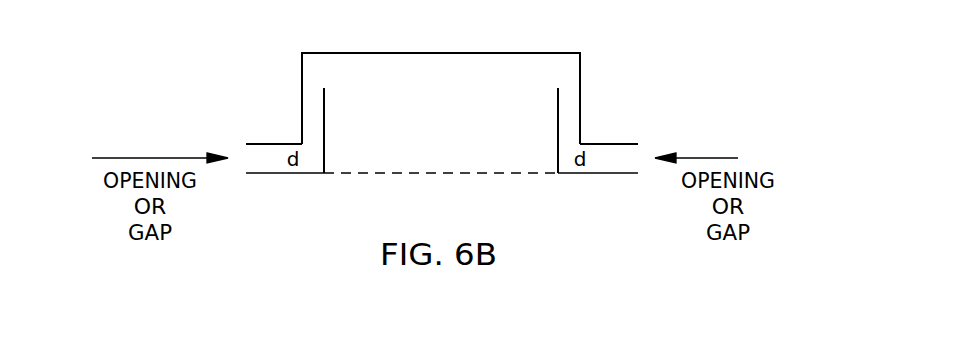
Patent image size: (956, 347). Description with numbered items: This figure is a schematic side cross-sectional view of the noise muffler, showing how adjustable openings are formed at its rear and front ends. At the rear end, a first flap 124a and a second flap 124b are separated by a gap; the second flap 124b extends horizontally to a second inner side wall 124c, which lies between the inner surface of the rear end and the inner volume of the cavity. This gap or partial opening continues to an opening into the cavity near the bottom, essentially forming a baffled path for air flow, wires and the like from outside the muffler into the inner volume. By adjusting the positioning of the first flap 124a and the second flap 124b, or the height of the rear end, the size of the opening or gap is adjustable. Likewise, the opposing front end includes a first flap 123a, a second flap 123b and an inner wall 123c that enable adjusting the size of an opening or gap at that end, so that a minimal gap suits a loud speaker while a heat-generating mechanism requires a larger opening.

The first flap 124a is at (265, 144).
The second flap 124b is at (285, 174).
The second inner side wall 124c is at (328, 104).
The first flap 123a is at (608, 144).
The second flap 123b is at (598, 174).
The inner wall 123c is at (554, 101).